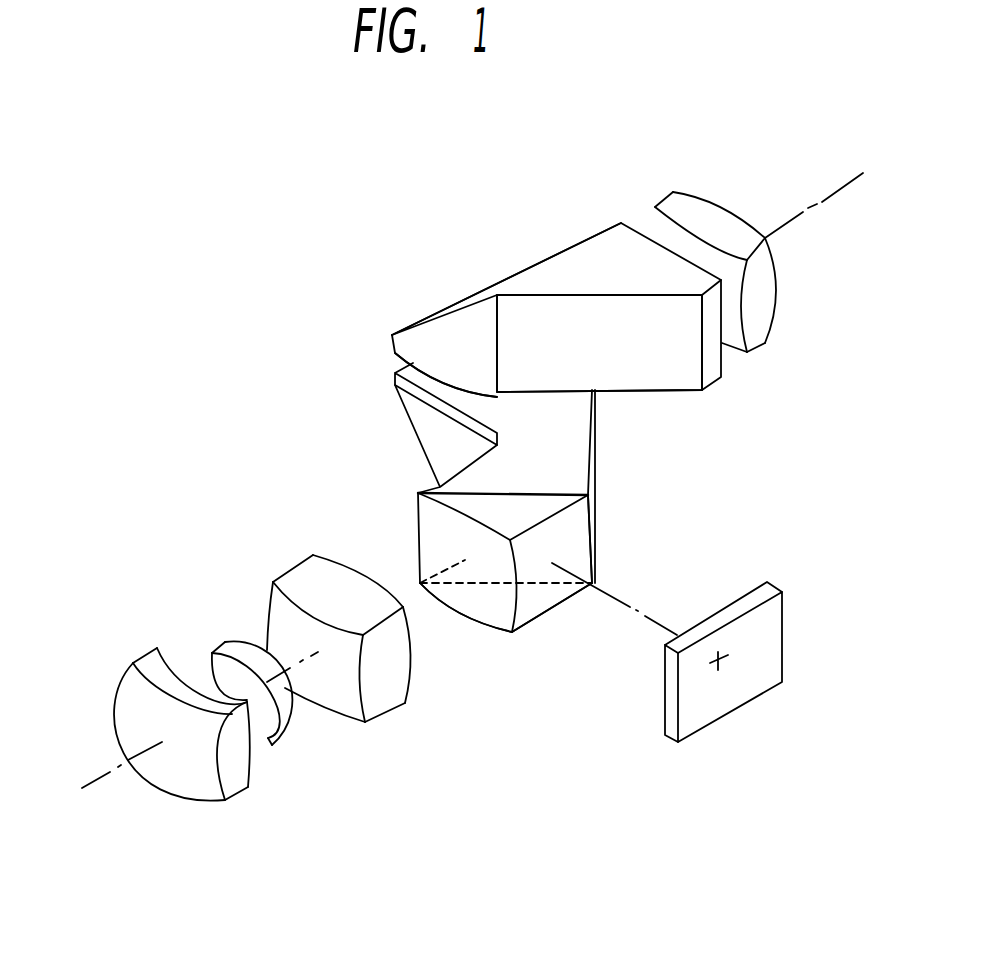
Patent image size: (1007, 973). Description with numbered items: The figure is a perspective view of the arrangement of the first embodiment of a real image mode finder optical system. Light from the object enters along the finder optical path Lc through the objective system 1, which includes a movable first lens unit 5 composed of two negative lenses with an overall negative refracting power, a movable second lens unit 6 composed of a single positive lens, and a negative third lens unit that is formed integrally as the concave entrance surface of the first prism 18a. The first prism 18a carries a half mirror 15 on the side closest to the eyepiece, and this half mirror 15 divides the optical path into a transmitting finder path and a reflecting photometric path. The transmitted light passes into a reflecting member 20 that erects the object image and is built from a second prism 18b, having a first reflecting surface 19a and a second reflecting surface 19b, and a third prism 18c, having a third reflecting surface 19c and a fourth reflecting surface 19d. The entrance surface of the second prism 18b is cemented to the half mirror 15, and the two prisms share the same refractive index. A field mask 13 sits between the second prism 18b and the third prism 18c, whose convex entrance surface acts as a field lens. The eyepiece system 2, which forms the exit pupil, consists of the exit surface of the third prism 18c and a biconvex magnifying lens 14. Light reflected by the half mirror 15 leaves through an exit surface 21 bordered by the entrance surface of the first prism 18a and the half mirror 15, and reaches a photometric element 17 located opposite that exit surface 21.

The objective system 1 is at (270, 678).
The eyepiece system 2 is at (518, 391).
The first lens unit 5 is at (223, 592).
The second lens unit 6 is at (320, 535).
The field mask 13 is at (417, 380).
The magnifying lens 14 is at (717, 218).
The half mirror 15 is at (496, 551).
The photometric element 17 is at (763, 640).
The first prism 18a is at (512, 632).
The second prism 18b is at (595, 477).
The third prism 18c is at (648, 218).
The first reflecting surface 19a is at (595, 495).
The second reflecting surface 19b is at (400, 418).
The third reflecting surface 19c is at (478, 292).
The fourth reflecting surface 19d is at (638, 355).
The reflecting member 20 is at (529, 285).
The exit surface 21 is at (553, 592).
The finder optical path Lc is at (107, 779).